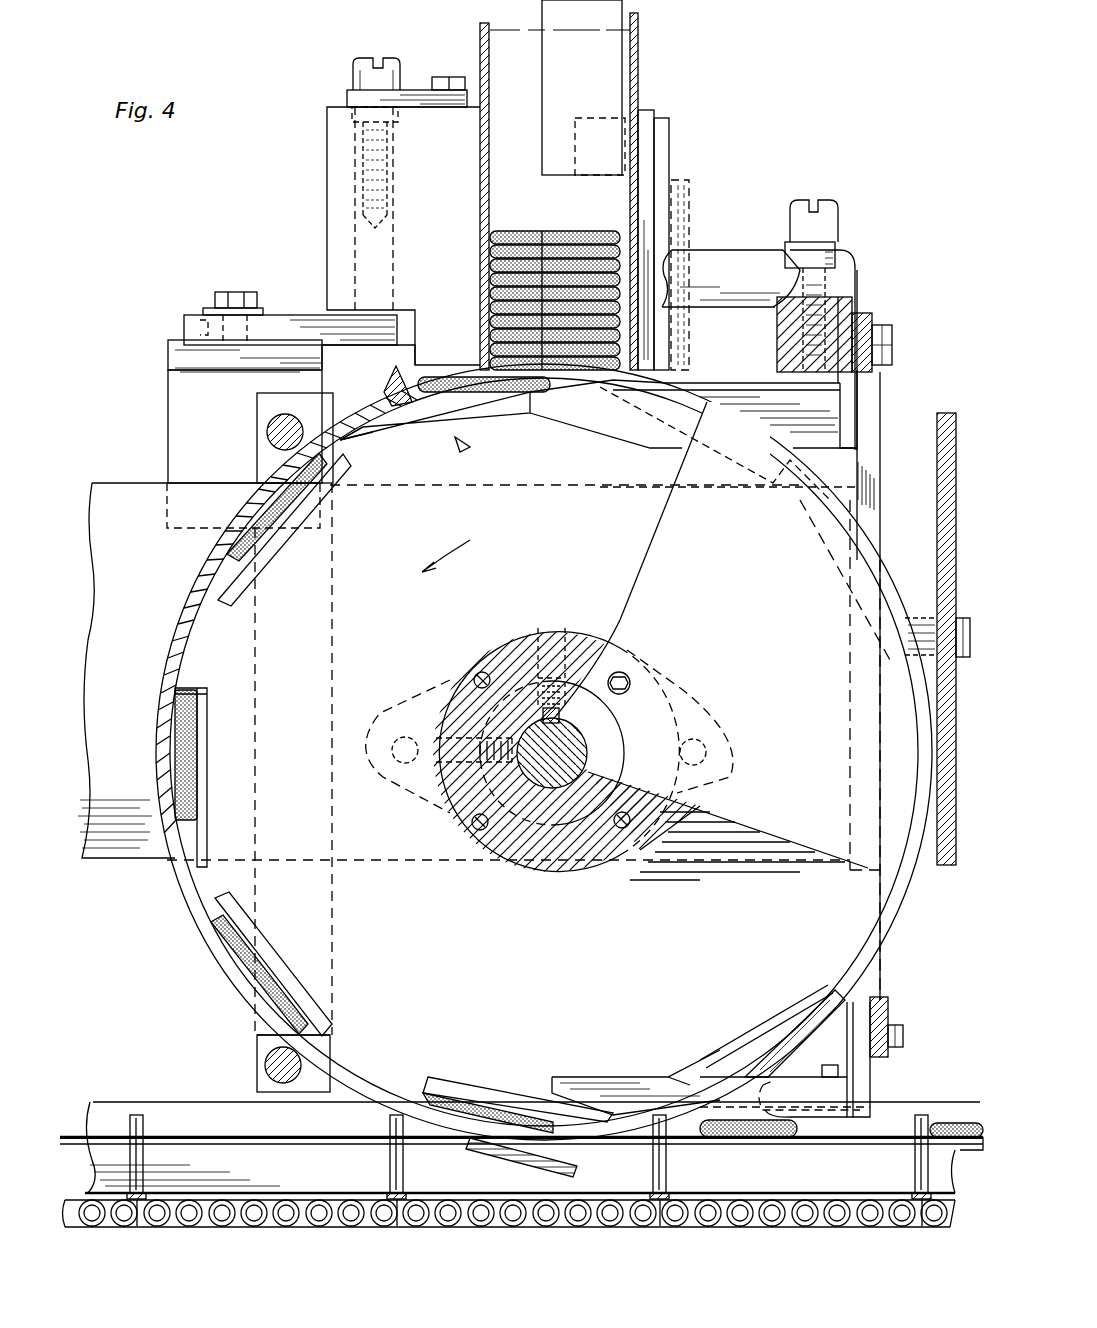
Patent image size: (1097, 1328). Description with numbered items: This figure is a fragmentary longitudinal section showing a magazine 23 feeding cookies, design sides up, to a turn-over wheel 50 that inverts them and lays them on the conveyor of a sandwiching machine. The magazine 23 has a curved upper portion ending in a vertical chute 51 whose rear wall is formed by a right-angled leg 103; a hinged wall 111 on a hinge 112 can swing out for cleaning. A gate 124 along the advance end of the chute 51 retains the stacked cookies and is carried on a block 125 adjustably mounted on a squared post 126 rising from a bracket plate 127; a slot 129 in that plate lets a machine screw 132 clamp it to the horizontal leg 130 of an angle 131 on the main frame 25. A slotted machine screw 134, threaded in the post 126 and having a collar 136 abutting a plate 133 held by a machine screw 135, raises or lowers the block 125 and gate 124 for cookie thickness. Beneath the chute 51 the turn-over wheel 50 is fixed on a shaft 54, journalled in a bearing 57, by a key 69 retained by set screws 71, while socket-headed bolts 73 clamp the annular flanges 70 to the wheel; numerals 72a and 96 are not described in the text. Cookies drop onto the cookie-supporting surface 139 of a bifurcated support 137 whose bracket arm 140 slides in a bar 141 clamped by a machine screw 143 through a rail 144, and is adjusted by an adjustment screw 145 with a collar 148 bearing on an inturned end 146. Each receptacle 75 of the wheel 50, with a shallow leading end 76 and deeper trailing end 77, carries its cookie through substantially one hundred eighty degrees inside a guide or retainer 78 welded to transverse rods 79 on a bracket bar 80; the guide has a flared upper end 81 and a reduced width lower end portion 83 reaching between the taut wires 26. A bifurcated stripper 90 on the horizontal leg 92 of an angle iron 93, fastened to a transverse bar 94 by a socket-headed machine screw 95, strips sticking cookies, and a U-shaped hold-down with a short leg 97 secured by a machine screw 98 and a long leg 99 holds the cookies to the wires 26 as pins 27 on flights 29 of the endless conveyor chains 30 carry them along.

The magazine 23 is at (640, 30).
The main frame 25 is at (890, 424).
The taut wires 26 is at (285, 1146).
The pins 27 is at (145, 1126).
The flights 29 is at (137, 1228).
The endless conveyor chains 30 is at (262, 1228).
The turn-over wheel 50 is at (215, 915).
The chute 51 is at (471, 327).
The shaft 54 is at (587, 752).
The bearing 57 is at (722, 778).
The key 69 is at (559, 712).
The side plates or flanges 70 is at (865, 545).
The set screws 71 is at (500, 672).
The bore 72a is at (560, 632).
The socket-headed bolts 73 is at (630, 681).
The cookie receiving receptacles 75 is at (455, 430).
The leading end 76 is at (370, 437).
The trailing end 77 is at (530, 405).
The guide or retainer 78 is at (170, 640).
The transverse rods 79 is at (267, 435).
The bracket bar 80 is at (257, 1037).
The outwardly flared upper end 81 is at (390, 386).
The reduced width lower end portion 83 is at (510, 1160).
The bifurcated stripper 90 is at (580, 1077).
The horizontal leg 92 is at (760, 1080).
The angle iron 93 is at (870, 1068).
The transverse bar 94 is at (885, 997).
The socket-headed machine screw 95 is at (903, 1035).
The lever 96 is at (750, 1048).
The short leg 97 is at (805, 1068).
The machine screw 98 is at (830, 1065).
The long leg 99 is at (830, 1137).
The right-angled leg 103 is at (640, 75).
The hinged wall 111 is at (542, 200).
The hinge 112 is at (690, 185).
The gate 124 is at (480, 245).
The block 125 is at (327, 225).
The squared post 126 is at (355, 245).
The bracket plate 127 is at (315, 315).
The slot 129 is at (200, 310).
The horizontal leg 130 is at (185, 368).
The angle 131 is at (168, 432).
The machine screw 132 is at (228, 292).
The plate 133 is at (412, 90).
The slotted machine screw 134 is at (380, 60).
The machine screw 135 is at (452, 77).
The collar 136 is at (352, 116).
The bifurcated support 137 is at (660, 440).
The cookie-supporting surface 139 is at (590, 405).
The bracket arm 140 is at (822, 350).
The bar 141 is at (777, 350).
The machine screw 143 is at (892, 342).
The rail 144 is at (872, 318).
The adjustment screw 145 is at (835, 215).
The inturned end 146 is at (788, 252).
The collar 148 is at (835, 252).